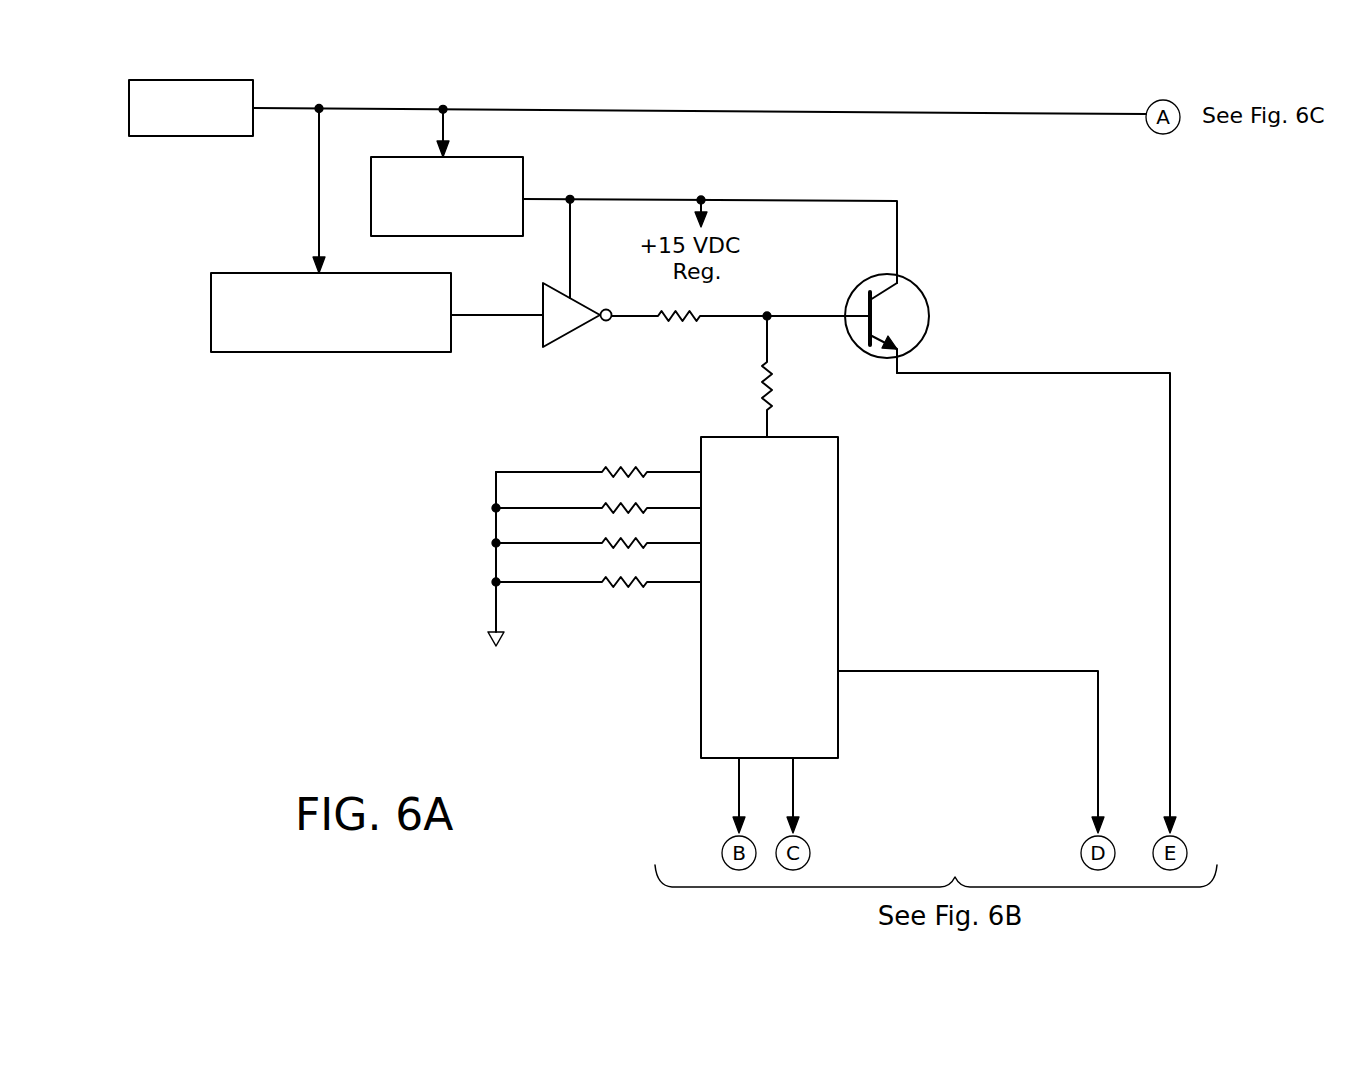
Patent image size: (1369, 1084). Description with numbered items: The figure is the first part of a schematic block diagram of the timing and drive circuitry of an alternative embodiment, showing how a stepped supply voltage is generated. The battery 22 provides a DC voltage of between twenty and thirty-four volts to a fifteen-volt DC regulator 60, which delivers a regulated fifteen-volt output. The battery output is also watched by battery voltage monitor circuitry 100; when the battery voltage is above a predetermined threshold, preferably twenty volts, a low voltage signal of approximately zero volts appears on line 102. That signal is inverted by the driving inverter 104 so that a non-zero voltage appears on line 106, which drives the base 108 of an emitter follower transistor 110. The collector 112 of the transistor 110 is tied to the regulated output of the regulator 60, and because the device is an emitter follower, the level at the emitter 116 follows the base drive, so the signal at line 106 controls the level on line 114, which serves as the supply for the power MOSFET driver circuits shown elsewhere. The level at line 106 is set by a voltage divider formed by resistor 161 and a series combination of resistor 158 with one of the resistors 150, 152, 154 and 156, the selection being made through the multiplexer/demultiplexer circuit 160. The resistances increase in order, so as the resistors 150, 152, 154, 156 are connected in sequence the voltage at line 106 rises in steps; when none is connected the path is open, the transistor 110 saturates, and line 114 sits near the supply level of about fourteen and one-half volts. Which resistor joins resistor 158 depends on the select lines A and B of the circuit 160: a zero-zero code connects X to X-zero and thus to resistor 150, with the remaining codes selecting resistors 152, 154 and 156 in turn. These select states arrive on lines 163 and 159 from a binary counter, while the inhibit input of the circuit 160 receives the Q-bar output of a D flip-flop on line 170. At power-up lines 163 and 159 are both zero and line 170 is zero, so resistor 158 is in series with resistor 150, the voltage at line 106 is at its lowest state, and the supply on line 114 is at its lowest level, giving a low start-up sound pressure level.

The battery 22 is at (202, 137).
The +15 VDC regulator 60 is at (523, 180).
The battery voltage monitor circuitry 100 is at (210, 303).
The line 102 is at (485, 319).
The driving inverter 104 is at (570, 340).
The resistor 161 is at (678, 329).
The line 106 is at (802, 312).
The base 108 is at (857, 325).
The emitter follower transistor 110 is at (899, 323).
The collector 112 is at (883, 280).
The line 114 is at (1015, 375).
The emitter 116 is at (878, 348).
The resistor 158 is at (760, 383).
The resistor 150 is at (617, 458).
The resistor 152 is at (617, 496).
The resistor 154 is at (616, 533).
The resistor 156 is at (616, 572).
The multiplexer/demultiplexer circuit 160 is at (840, 528).
The line 170 is at (860, 667).
The line 159 is at (737, 793).
The line 163 is at (795, 792).